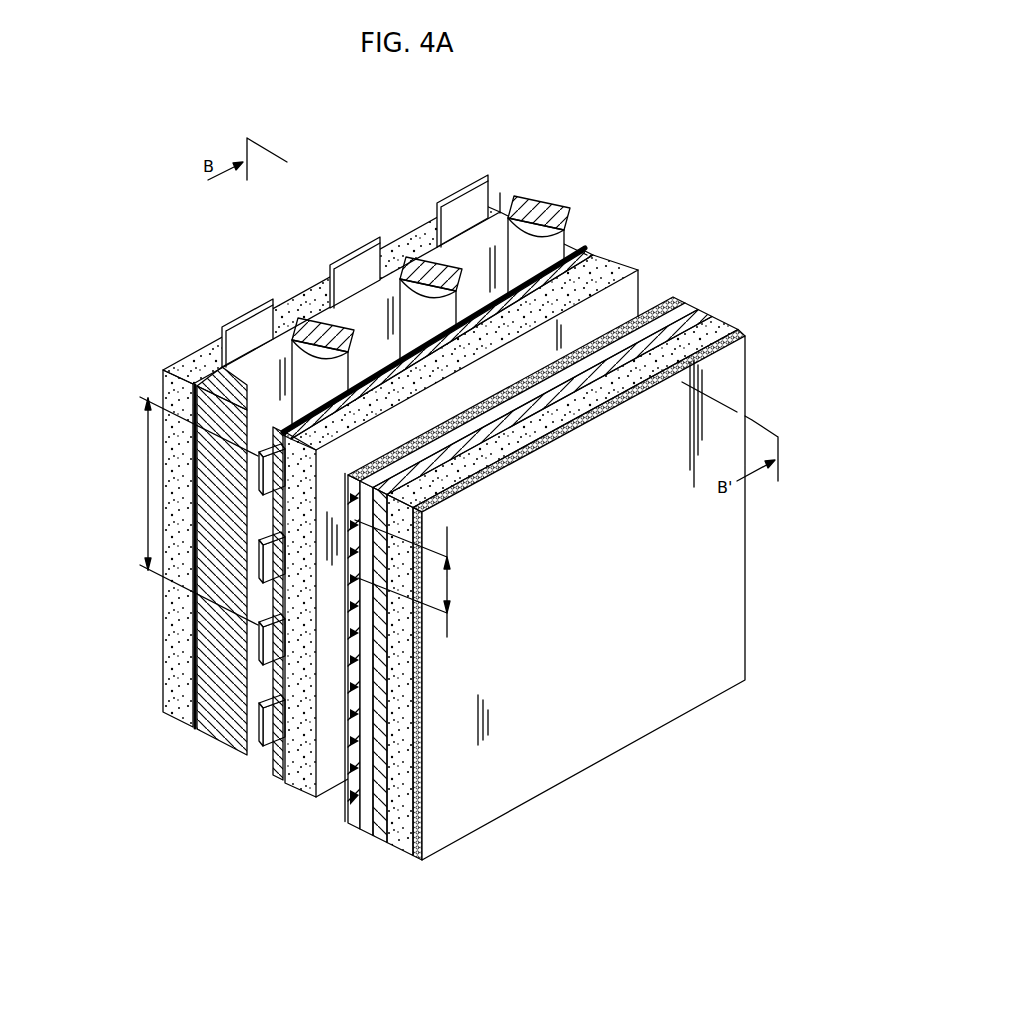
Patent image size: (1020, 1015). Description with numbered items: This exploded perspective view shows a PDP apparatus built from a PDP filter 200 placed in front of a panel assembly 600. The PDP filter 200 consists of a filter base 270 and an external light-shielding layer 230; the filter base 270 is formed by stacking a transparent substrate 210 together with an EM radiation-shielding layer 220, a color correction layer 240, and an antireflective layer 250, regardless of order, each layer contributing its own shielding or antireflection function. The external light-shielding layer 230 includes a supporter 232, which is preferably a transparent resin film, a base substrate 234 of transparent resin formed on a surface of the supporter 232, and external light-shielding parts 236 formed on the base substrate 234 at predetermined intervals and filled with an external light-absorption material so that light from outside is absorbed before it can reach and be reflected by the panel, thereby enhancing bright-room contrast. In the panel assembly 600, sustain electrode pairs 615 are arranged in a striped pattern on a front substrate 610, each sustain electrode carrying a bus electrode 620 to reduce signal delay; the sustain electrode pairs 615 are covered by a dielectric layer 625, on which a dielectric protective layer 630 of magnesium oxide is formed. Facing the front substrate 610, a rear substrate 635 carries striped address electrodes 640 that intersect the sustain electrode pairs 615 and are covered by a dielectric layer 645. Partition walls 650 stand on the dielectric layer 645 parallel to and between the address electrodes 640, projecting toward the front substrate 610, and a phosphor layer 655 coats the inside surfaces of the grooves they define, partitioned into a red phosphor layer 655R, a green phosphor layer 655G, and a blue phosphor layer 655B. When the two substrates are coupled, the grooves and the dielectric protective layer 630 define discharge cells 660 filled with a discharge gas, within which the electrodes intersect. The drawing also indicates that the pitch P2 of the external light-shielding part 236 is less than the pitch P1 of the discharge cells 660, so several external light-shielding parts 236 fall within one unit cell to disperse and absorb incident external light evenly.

The PDP filter 200 is at (511, 591).
The transparent substrate 210 is at (414, 850).
The EM radiation-shielding layer 220 is at (375, 840).
The external light-shielding layer 230 is at (483, 609).
The supporter 232 is at (379, 834).
The base substrate 234 is at (362, 826).
The external light-shielding part 236 is at (350, 822).
The color correction layer 240 is at (347, 797).
The antireflective layer 250 is at (583, 622).
The filter base 270 is at (555, 634).
The panel assembly 600 is at (364, 466).
The front substrate 610 is at (613, 260).
The sustain electrode pairs 615 is at (250, 581).
The bus electrode 620 is at (262, 642).
The dielectric layer 625 is at (593, 255).
The dielectric protective layer 630 is at (585, 243).
The rear substrate 635 is at (170, 680).
The address electrodes 640 is at (235, 333).
The dielectric layer 645 is at (175, 722).
The partition walls 650 is at (215, 730).
The phosphor layer 655 is at (354, 246).
The red phosphor layer 655R is at (275, 345).
The green phosphor layer 655G is at (385, 310).
The blue phosphor layer 655B is at (454, 197).
The discharge cells 660 is at (533, 240).
The pitch of the discharge cells P1 is at (189, 511).
The pitch of the external light-shielding part P2 is at (413, 578).